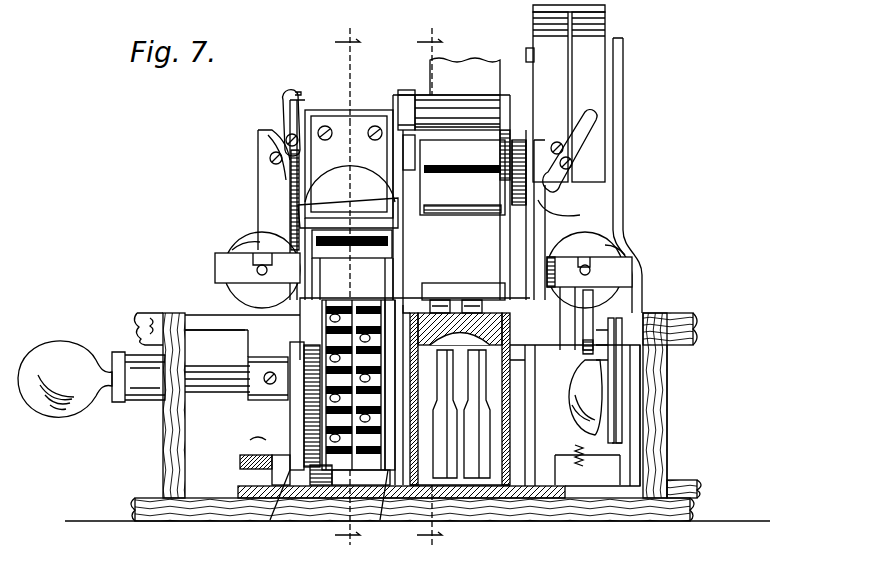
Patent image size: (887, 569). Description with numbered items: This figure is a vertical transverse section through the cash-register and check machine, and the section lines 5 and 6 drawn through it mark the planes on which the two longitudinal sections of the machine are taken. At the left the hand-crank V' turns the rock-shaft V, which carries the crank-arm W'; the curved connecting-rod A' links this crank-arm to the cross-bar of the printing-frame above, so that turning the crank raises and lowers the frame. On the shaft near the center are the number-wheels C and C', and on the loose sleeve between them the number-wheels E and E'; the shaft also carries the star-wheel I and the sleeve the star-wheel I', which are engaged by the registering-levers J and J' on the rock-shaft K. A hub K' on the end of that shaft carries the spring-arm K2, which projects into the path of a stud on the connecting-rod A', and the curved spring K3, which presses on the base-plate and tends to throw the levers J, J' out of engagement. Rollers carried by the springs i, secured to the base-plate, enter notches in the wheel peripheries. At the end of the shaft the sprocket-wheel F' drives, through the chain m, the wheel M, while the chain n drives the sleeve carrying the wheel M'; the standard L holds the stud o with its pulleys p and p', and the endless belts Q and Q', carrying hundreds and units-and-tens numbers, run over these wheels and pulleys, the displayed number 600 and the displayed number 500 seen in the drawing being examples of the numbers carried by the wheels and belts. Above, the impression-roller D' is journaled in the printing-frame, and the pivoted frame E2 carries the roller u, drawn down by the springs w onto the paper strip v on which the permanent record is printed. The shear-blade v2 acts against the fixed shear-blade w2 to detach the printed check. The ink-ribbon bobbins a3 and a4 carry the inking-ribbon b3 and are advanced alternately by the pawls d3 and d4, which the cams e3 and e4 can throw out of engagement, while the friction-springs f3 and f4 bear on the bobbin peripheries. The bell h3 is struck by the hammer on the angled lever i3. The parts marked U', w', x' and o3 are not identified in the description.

The hand-crank V' is at (91, 382).
The rock-shaft V is at (217, 365).
The crank-arm W' is at (263, 374).
The curved connecting-rod A' is at (218, 343).
The spring-arm K2 is at (283, 406).
The hub K' is at (256, 467).
The rock-shaft K is at (279, 471).
The star-wheel I is at (351, 374).
The star-wheel I' is at (373, 374).
The number-wheel C is at (321, 476).
The number-wheel E is at (361, 478).
The sprocket-wheel F' is at (452, 392).
The springs i is at (461, 414).
The number-wheel E' is at (552, 352).
The number-wheel C' is at (484, 291).
The inking-ribbon b3 is at (403, 298).
The chain n is at (400, 312).
The wheel M is at (517, 409).
The bell h3 is at (585, 397).
The rod o3 is at (594, 330).
The angled lever i3 is at (613, 380).
The curved spring K3 is at (586, 457).
The chain m is at (619, 441).
The wheel M' is at (591, 470).
The section line 5 is at (347, 284).
The section line 6 is at (429, 284).
The registering-lever J is at (274, 506).
The registering-lever J' is at (379, 506).
The shear-blade v2 is at (349, 164).
The cam e3 is at (286, 120).
The pawl d3 is at (272, 164).
The ink-ribbon bobbin a3 is at (257, 270).
The friction-spring f3 is at (240, 252).
The shear-blade w2 is at (348, 233).
The roller frame U' is at (451, 182).
The roller u is at (457, 112).
The paper strip v is at (462, 136).
The number wheel digit 600 is at (468, 151).
The number wheel digit 500 is at (468, 193).
The frame E2 is at (502, 102).
The springs w is at (515, 149).
The rack w' is at (410, 152).
The gear x' is at (516, 181).
The impression-roller D' is at (524, 215).
The endless belt Q is at (550, 97).
The belt Q' is at (591, 120).
The pulley p is at (559, 22).
The stud o is at (524, 55).
The pulley p' is at (614, 10).
The standard L is at (623, 200).
The cam e4 is at (570, 151).
The pawl d4 is at (576, 200).
The ink-ribbon bobbin a4 is at (589, 291).
The friction-spring f4 is at (625, 252).